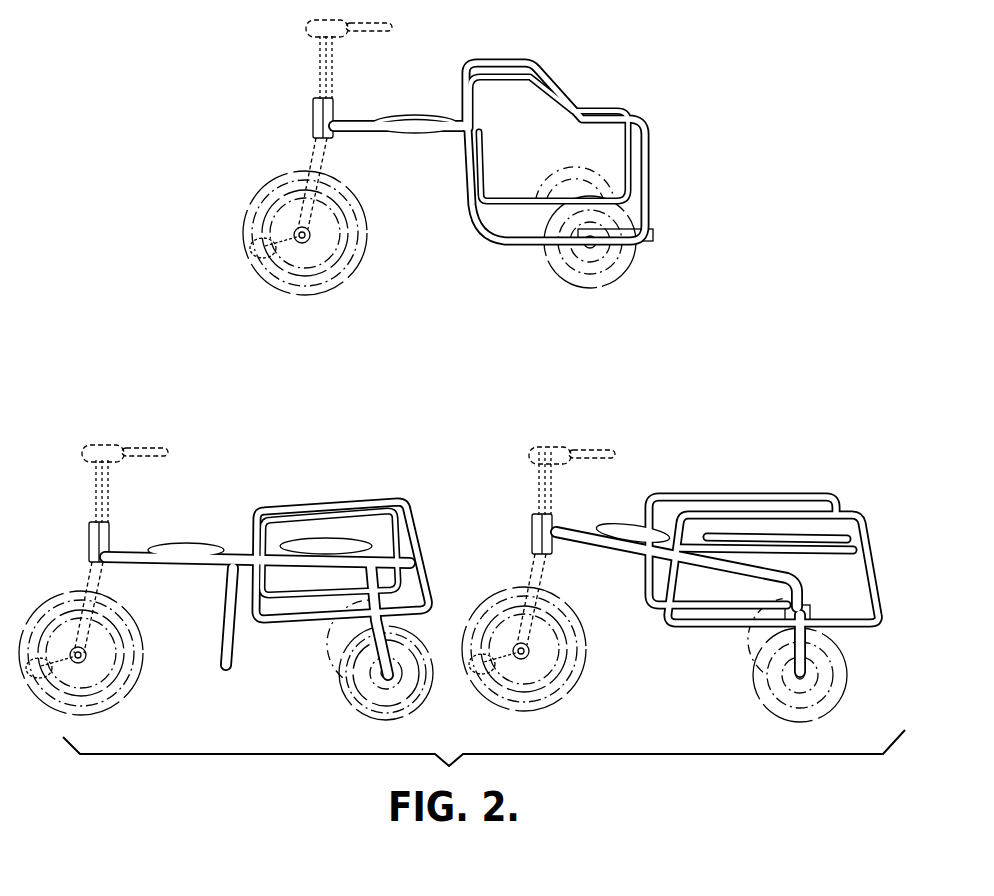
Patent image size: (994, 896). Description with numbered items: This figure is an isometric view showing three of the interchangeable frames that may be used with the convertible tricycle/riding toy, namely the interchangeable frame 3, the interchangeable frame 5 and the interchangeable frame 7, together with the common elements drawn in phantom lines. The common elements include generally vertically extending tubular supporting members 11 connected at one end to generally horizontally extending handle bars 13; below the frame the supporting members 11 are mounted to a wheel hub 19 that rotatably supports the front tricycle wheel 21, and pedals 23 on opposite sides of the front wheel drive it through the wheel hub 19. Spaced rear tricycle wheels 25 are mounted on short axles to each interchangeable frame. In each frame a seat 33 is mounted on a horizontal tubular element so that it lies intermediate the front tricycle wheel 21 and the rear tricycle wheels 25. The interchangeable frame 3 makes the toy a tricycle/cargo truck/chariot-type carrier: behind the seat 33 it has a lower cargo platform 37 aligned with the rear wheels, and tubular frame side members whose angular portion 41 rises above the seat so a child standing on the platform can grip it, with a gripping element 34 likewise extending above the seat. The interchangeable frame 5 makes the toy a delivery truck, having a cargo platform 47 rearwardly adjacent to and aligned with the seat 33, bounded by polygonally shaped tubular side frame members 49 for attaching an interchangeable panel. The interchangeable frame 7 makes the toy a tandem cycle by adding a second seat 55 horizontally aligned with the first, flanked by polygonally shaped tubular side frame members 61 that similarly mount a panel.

The interchangeable frame 3 is at (460, 220).
The interchangeable frame 5 is at (757, 480).
The interchangeable frame 7 is at (295, 488).
The vertically extending tubular supporting members 11 is at (318, 75).
The handle bars 13 is at (390, 32).
The wheel hub 19 is at (311, 236).
The front tricycle wheel 21 is at (350, 263).
The pedals 23 is at (262, 245).
The rear tricycle wheels 25 is at (565, 170).
The seat 33 is at (647, 527).
The seat back frame 34 is at (575, 106).
The lower cargo platform 37 is at (507, 224).
The angular portion 41 is at (558, 98).
The cargo platform 47 is at (845, 536).
The tubular side frame members 49 is at (820, 493).
The second seat 55 is at (333, 538).
The tubular side frame members 61 is at (407, 508).